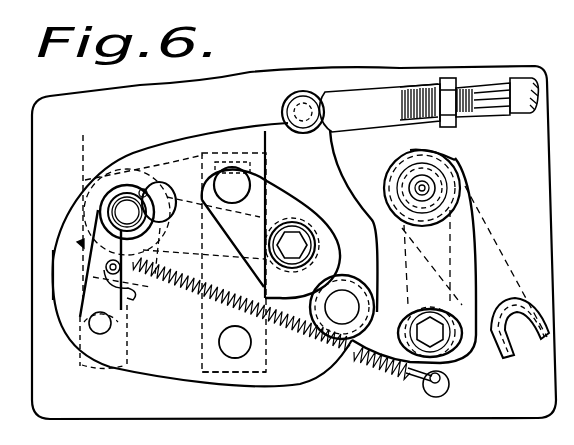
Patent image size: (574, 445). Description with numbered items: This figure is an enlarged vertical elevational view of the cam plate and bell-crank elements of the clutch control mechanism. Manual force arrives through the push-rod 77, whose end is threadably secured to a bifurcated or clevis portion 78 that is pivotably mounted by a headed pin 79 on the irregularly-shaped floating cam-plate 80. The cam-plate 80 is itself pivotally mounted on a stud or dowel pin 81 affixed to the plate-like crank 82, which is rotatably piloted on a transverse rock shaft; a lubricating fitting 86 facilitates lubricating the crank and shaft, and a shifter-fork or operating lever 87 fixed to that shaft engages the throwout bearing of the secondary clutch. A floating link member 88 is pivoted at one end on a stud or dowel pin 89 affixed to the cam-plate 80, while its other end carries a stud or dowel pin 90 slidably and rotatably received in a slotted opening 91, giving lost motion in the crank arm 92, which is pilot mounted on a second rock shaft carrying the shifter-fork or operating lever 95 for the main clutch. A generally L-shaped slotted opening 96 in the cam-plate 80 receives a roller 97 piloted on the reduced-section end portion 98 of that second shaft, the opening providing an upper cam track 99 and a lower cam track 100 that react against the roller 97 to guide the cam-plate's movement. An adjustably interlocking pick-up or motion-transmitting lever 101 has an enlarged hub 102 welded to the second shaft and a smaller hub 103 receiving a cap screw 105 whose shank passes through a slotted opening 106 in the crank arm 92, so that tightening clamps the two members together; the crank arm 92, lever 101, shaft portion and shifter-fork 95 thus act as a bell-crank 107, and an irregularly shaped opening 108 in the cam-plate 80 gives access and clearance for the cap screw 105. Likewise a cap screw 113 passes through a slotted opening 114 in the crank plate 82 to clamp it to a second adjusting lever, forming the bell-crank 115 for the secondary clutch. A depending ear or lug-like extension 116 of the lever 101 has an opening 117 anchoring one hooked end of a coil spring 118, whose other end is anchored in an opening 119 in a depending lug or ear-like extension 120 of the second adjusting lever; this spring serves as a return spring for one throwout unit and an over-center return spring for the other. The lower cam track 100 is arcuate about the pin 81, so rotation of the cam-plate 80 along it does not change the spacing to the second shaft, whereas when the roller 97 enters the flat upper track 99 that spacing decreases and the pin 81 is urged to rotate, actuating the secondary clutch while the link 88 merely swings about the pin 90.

The push-rod 77 is at (490, 92).
The bifurcated or clevis portion 78 is at (362, 90).
The headed pin 79 is at (310, 90).
The floating cam-plate 80 is at (262, 128).
The stud or dowel pin 81 is at (350, 303).
The plate-like crank 82 is at (368, 202).
The lubricating fitting 86 is at (427, 186).
The shifter-fork or operating lever 87 is at (497, 237).
The floating link member 88 is at (203, 353).
The stud or dowel pin 89 is at (240, 355).
The stud or dowel pin 90 is at (250, 180).
The slotted opening 91 is at (206, 180).
The crank arm 92 is at (168, 163).
The shifter-fork or operating lever 95 is at (130, 325).
The L-shaped slotted opening 96 is at (53, 252).
The roller 97 is at (114, 203).
The reduced-section end portion 98 is at (138, 222).
The upper cam track or surface 99 is at (143, 189).
The lower cam track or surface 100 is at (104, 265).
The adjustably interlocking pick-up or motion-transmitting lever 101 is at (268, 178).
The enlarged hub 102 is at (86, 134).
The smaller hub 103 is at (308, 222).
The cap screw 105 is at (283, 238).
The slotted opening 106 is at (300, 216).
The bell-crank 107 is at (81, 242).
The irregularly shaped opening 108 is at (332, 222).
The cap screw 113 is at (438, 342).
The slotted opening 114 is at (504, 358).
The bell-crank 115 is at (458, 154).
The depending ear or lug-like extension 116 is at (128, 300).
The opening 117 is at (80, 300).
The coil spring 118 is at (350, 362).
The opening 119 is at (442, 388).
The depending lug or ear-like extension 120 is at (424, 387).